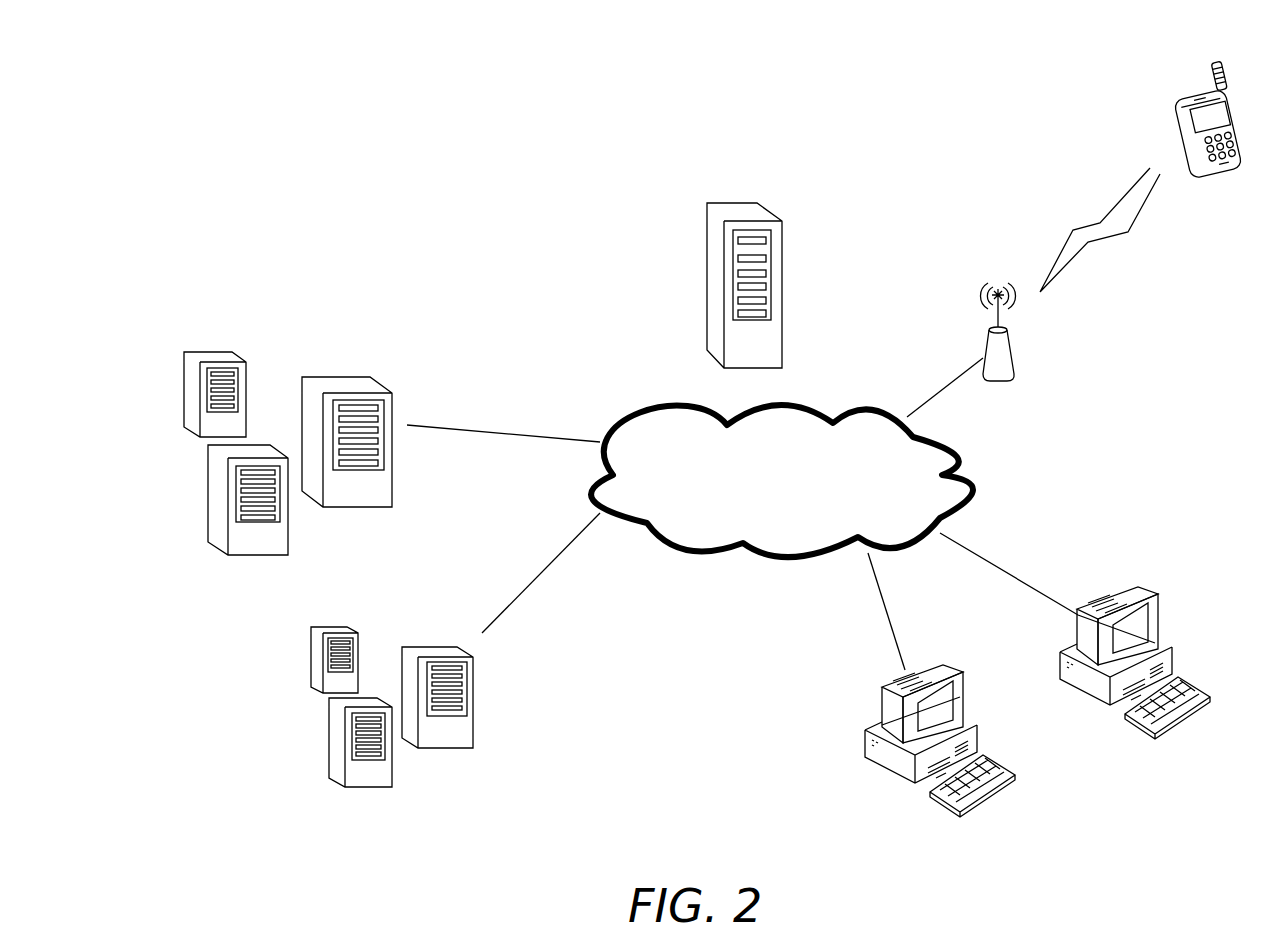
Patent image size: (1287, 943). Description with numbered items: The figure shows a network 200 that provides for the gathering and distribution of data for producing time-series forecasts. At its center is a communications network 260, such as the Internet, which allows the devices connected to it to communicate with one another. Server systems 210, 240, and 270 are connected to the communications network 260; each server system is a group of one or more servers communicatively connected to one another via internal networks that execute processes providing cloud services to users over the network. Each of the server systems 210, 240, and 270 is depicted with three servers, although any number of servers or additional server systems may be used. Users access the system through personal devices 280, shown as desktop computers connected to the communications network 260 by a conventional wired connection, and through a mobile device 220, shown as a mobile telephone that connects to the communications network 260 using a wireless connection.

The network 200 is at (619, 218).
The server system 210 is at (743, 213).
The mobile device 220 is at (1192, 95).
The server system 240 is at (388, 370).
The communications network 260 is at (743, 547).
The server system 270 is at (220, 688).
The personal device 280 is at (1007, 783).